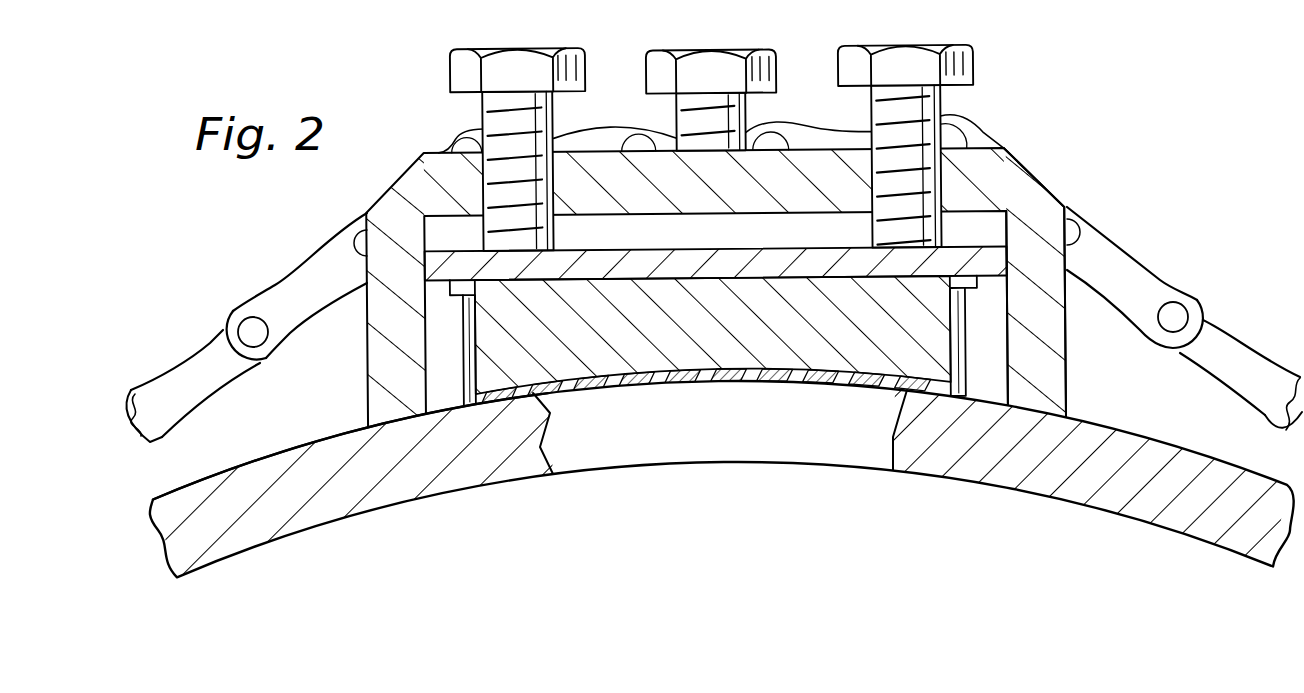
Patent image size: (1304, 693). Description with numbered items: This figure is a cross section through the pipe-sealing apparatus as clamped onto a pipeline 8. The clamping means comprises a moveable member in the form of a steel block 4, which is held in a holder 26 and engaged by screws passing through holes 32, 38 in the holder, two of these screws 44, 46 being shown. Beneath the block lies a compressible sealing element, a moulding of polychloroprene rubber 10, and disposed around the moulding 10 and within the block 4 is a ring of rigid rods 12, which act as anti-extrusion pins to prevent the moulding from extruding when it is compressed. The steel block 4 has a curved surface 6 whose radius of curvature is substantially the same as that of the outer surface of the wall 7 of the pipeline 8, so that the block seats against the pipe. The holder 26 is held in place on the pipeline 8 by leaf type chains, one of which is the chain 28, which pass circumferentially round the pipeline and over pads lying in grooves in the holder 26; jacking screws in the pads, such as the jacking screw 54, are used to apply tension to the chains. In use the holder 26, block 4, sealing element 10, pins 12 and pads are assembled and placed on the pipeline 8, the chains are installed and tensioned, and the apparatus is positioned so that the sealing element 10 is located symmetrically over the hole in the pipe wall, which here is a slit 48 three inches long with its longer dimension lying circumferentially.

The steel block 4 is at (1007, 327).
The curved surface 6 is at (463, 397).
The wall 7 is at (313, 445).
The pipeline 8 is at (343, 500).
The moulding of polychloroprene rubber 10 is at (620, 357).
The rigid rods 12 is at (463, 317).
The holder 26 is at (983, 170).
The leaf type chain 28 is at (1113, 270).
The hole 32 is at (480, 177).
The hole 38 is at (950, 170).
The screw 44 is at (507, 123).
The screw 46 is at (913, 115).
The slit 48 is at (833, 430).
The jacking screw 54 is at (720, 62).